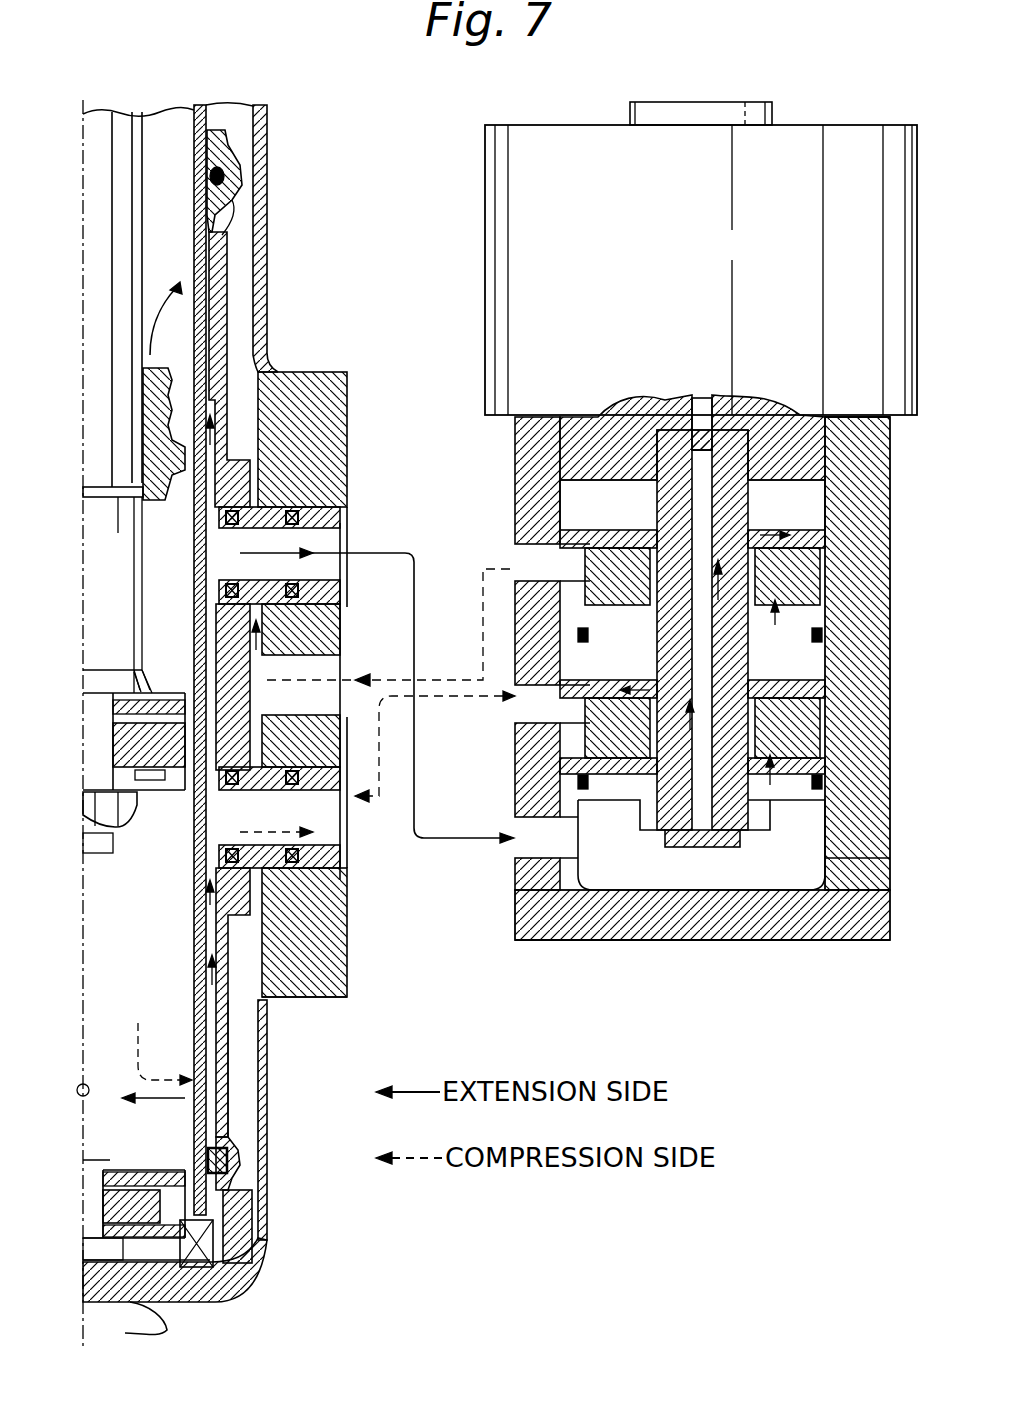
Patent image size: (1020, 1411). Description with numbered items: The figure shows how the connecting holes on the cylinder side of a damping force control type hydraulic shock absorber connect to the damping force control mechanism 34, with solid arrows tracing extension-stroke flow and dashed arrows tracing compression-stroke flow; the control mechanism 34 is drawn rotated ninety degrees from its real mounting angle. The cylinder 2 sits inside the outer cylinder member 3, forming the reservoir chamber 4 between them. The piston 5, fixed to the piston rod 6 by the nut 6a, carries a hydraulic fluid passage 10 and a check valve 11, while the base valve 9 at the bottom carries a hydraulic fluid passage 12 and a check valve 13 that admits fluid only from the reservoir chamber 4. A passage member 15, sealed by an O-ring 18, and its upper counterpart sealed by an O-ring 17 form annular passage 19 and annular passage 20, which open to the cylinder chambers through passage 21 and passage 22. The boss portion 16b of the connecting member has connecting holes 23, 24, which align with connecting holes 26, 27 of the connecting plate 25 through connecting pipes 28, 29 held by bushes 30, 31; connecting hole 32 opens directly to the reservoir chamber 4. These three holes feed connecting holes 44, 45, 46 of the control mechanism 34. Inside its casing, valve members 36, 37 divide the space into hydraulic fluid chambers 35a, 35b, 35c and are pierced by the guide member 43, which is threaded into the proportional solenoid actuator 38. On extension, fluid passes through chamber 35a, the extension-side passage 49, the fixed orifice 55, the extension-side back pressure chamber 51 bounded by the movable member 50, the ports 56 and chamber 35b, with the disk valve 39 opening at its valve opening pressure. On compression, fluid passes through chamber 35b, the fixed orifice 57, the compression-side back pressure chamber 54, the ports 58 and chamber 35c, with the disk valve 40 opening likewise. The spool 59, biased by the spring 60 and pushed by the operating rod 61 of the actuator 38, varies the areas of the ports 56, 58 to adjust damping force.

The cylinder 2 is at (200, 105).
The outer cylinder member 3 is at (258, 106).
The reservoir chamber 4 is at (242, 316).
The piston 5 is at (143, 680).
The piston rod 6 is at (130, 118).
The nut 6a is at (100, 852).
The base valve 9 is at (180, 1285).
The hydraulic fluid passage 10 is at (162, 790).
The check valve 11 is at (158, 690).
The hydraulic fluid passage 12 is at (235, 1255).
The check valve 13 is at (252, 1230).
The passage member 15 is at (230, 1078).
The boss portion 16b is at (347, 990).
The O-ring 17 is at (228, 178).
The O-ring 18 is at (230, 1160).
The annular passage 19 is at (222, 290).
The annular passage 20 is at (230, 1048).
The passage 21 is at (235, 225).
The passage 22 is at (240, 1150).
The connecting hole 23 is at (340, 545).
The connecting hole 24 is at (345, 820).
The connecting plate 25 is at (310, 375).
The connecting hole 26 is at (320, 597).
The connecting hole 27 is at (342, 790).
The connecting pipe 28 is at (293, 493).
The connecting pipe 29 is at (345, 905).
The bush 30 is at (325, 510).
The bush 31 is at (342, 860).
The connecting hole 32 is at (322, 662).
The damping force control mechanism 34 is at (660, 948).
The hydraulic fluid chamber 35a is at (855, 940).
The hydraulic fluid chamber 35b is at (790, 745).
The hydraulic fluid chamber 35c is at (860, 425).
The valve member 36 is at (730, 835).
The valve member 37 is at (790, 690).
The proportional solenoid actuator 38 is at (550, 128).
The disk valve 39 is at (760, 810).
The disk valve 40 is at (820, 608).
The guide member 43 is at (760, 850).
The connecting hole 44 is at (530, 845).
The connecting hole 45 is at (515, 690).
The connecting hole 46 is at (525, 555).
The extension-side passage 49 is at (825, 870).
The movable member 50 is at (810, 770).
The extension-side back pressure chamber 51 is at (810, 712).
The compression-side back pressure chamber 54 is at (805, 525).
The fixed orifice 55 is at (590, 785).
The ports 56 is at (600, 560).
The fixed orifice 57 is at (815, 640).
The ports 58 is at (545, 470).
The spool 59 is at (620, 900).
The spring 60 is at (705, 850).
The operating rod 61 is at (720, 400).